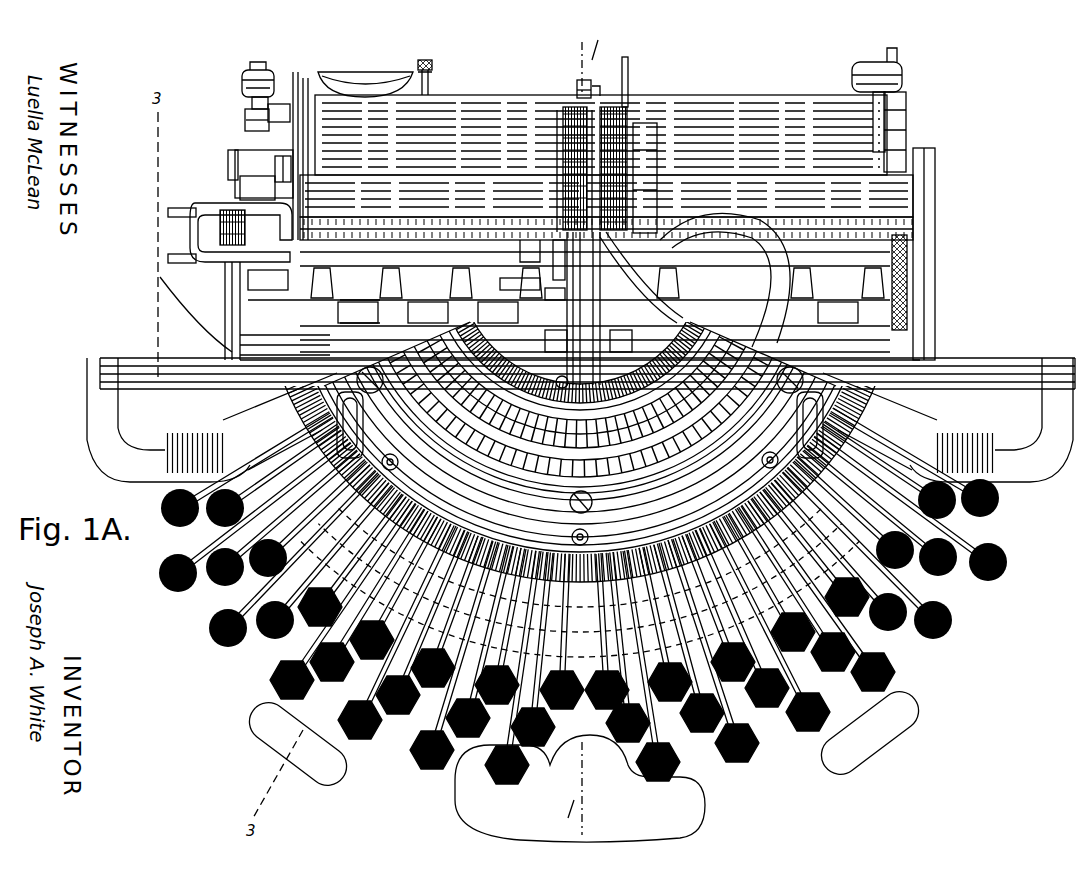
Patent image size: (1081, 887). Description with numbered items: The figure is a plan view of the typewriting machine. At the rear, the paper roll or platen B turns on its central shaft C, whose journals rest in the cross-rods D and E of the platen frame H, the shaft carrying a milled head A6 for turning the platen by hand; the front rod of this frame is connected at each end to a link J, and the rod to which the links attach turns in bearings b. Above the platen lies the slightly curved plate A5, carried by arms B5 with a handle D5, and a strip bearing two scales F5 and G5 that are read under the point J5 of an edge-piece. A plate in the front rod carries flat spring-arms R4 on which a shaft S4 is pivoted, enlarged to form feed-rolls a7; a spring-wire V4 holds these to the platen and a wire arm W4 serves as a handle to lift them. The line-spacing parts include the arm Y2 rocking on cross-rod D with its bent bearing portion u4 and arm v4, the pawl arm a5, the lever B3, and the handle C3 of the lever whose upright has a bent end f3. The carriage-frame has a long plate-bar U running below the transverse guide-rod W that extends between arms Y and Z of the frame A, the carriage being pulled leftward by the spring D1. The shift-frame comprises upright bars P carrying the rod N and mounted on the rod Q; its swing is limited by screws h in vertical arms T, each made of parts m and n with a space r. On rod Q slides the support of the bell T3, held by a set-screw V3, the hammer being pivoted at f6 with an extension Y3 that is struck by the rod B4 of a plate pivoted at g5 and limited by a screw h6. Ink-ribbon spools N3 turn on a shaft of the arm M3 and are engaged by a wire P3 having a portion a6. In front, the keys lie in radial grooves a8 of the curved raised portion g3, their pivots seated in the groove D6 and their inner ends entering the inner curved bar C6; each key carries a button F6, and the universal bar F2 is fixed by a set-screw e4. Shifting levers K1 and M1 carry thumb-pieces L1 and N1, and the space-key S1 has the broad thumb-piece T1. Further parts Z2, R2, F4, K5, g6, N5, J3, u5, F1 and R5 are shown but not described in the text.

The plate A5 is at (395, 200).
The arm B5 is at (305, 142).
The scale Z2 is at (290, 225).
The flat spring-arms R4 is at (458, 262).
The type-bar hanger R2 is at (318, 272).
The shaft S4 is at (848, 280).
The feed-rolls a7 is at (598, 312).
The scale F5 is at (510, 262).
The platen frame H is at (518, 274).
The point J5 is at (530, 300).
The vibrator frame F4 is at (556, 260).
The vibrator arm K5 is at (650, 253).
The wire P3 is at (630, 262).
The spools N3 is at (563, 125).
The rod B4 is at (630, 62).
The ribbon guide g6 is at (582, 80).
The screw h6 is at (576, 92).
The vibrator rods N5 is at (548, 352).
The arm M3 is at (755, 240).
The vertical arms T is at (242, 76).
The screws h is at (262, 62).
The rear part n is at (242, 82).
The space r is at (244, 90).
The front part m is at (252, 103).
The upright bars P is at (245, 118).
The rod Q is at (293, 80).
The handle D5 is at (305, 80).
The bell T3 is at (362, 72).
The set-screw V3 is at (430, 64).
The pivot f6 is at (430, 76).
The extension Y3 is at (428, 95).
The rod N is at (316, 116).
The platen shaft C is at (270, 160).
The guide-rod W is at (982, 365).
The arm Y2 is at (257, 188).
The pawl arm a5 is at (195, 205).
The bent end f3 is at (228, 215).
The pivot g5 is at (285, 218).
The bearing portion u4 is at (190, 224).
The lever B3 is at (180, 238).
The handle C3 is at (165, 252).
The arm v4 is at (220, 262).
The wire portion a6 is at (160, 277).
The cross-rod D is at (225, 290).
The lever J3 is at (210, 310).
The wire arm W4 is at (285, 312).
The spring-wire V4 is at (260, 299).
The pin u5 is at (220, 352).
The link J is at (956, 320).
The frame plate F' F1 is at (310, 345).
The groove D6 is at (616, 500).
The cross-rod E is at (936, 294).
The platen B is at (900, 200).
The milled head A6 is at (908, 284).
The frame arm Y is at (118, 410).
The frame arm Z is at (1042, 398).
The frame A is at (215, 418).
The plate-bar U is at (226, 396).
The scale G5 is at (580, 328).
The segment ring R5 is at (568, 442).
The curved raised portion g3 is at (618, 381).
The inner curved bar C6 is at (390, 454).
The set-screw e4 is at (570, 504).
The radial groove a8 is at (650, 433).
The bearings b is at (690, 540).
The universal bar F2 is at (655, 492).
The spring D1 is at (460, 738).
The button F6 is at (209, 628).
The shifting lever M1 is at (310, 714).
The thumb-piece N1 is at (340, 768).
The thumb-piece L1 is at (900, 740).
The thumb-piece T1 is at (705, 802).
The shifting lever K1 is at (830, 682).
The space-key S1 is at (585, 722).